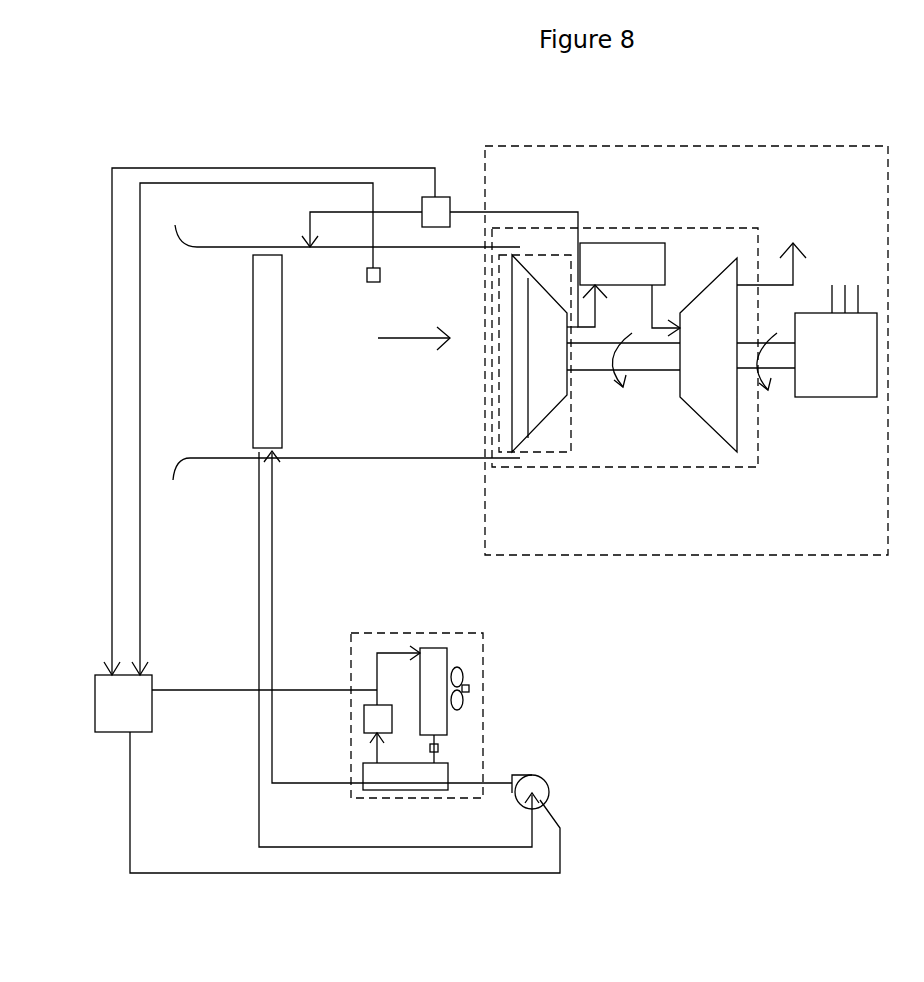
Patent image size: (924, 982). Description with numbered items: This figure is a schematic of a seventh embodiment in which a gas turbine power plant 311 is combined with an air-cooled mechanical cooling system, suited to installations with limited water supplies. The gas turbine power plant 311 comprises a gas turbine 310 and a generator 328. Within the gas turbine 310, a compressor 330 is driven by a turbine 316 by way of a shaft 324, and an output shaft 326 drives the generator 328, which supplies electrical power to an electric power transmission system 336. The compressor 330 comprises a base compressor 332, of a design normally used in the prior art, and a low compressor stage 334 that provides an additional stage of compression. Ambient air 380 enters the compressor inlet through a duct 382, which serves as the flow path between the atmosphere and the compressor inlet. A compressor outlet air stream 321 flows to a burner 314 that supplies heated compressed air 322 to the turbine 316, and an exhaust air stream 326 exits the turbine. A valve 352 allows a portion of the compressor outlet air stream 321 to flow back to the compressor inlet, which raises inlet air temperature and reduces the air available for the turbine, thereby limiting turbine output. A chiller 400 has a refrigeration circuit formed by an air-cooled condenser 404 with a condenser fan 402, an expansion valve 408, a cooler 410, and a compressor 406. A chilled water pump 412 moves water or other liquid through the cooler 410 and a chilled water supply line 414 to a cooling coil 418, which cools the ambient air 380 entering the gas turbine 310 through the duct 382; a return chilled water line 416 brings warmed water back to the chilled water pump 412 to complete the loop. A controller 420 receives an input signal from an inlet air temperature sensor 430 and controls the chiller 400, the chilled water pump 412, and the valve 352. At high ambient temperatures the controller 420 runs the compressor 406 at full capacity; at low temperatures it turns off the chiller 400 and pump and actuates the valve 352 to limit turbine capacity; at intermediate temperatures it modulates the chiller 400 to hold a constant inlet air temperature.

The gas turbine 310 is at (680, 228).
The gas turbine power plant 311 is at (732, 555).
The burner 314 is at (630, 242).
The turbine 316 is at (708, 390).
The compressor outlet air stream 321 is at (570, 328).
The heated compressed air 322 is at (663, 322).
The shaft 324 is at (653, 358).
The output shaft / exhaust air stream 326 is at (793, 270).
The generator 328 is at (816, 368).
The compressor 330 is at (562, 452).
The base compressor 332 is at (543, 400).
The low compressor stage 334 is at (520, 437).
The electric power transmission system 336 is at (862, 303).
The valve 352 is at (423, 203).
The ambient air 380 is at (153, 350).
The duct 382 is at (380, 459).
The chiller 400 is at (485, 648).
The condenser fan 402 is at (465, 700).
The air-cooled condenser 404 is at (440, 662).
The compressor 406 is at (366, 717).
The expansion valve 408 is at (439, 748).
The cooler 410 is at (428, 790).
The chilled water pump 412 is at (542, 797).
The chilled water supply line 414 is at (272, 602).
The return chilled water line 416 is at (257, 753).
The cooling coil 418 is at (263, 263).
The controller 420 is at (143, 713).
The inlet air temperature sensor 430 is at (381, 281).